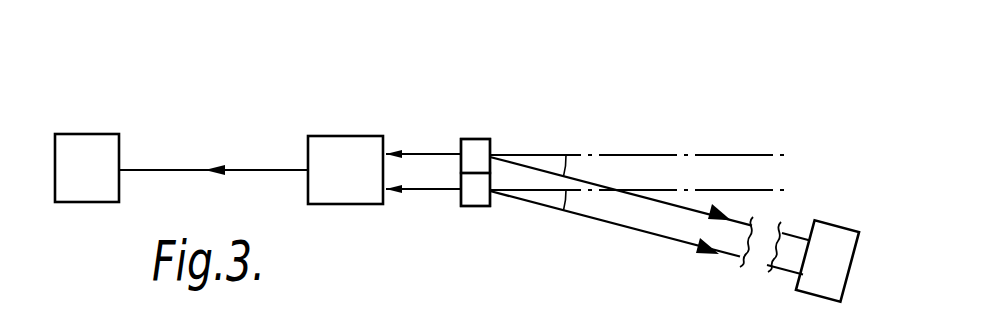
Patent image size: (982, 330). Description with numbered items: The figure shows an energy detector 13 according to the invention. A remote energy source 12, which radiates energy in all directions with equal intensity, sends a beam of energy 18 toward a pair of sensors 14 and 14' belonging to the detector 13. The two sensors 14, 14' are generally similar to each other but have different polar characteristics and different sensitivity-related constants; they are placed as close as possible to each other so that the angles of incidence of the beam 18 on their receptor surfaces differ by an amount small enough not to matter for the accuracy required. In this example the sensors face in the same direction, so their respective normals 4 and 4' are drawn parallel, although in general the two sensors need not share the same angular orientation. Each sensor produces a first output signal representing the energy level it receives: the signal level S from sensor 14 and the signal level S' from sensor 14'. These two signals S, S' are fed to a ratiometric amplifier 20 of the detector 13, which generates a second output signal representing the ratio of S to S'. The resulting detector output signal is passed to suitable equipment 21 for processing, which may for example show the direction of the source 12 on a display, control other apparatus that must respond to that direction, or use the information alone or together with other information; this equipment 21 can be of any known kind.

The equipment for processing the output signals 21 is at (96, 186).
The ratiometric amplifier 20 is at (356, 186).
The energy detector 13 is at (405, 135).
The sensor 14 is at (493, 137).
The sensor 14' is at (493, 219).
The normal 4 is at (638, 127).
The normal 4' is at (639, 143).
The beam of energy 18 is at (672, 228).
The energy source 12 is at (841, 274).
The received signal level S is at (424, 128).
The received signal level S' is at (424, 216).